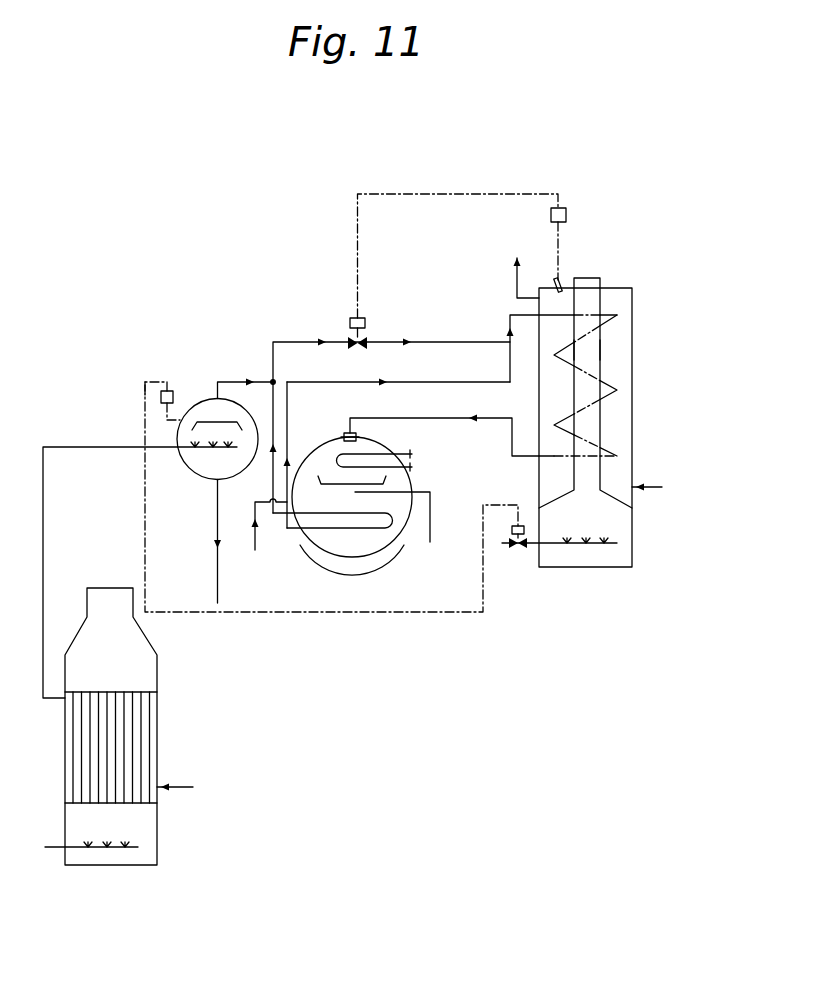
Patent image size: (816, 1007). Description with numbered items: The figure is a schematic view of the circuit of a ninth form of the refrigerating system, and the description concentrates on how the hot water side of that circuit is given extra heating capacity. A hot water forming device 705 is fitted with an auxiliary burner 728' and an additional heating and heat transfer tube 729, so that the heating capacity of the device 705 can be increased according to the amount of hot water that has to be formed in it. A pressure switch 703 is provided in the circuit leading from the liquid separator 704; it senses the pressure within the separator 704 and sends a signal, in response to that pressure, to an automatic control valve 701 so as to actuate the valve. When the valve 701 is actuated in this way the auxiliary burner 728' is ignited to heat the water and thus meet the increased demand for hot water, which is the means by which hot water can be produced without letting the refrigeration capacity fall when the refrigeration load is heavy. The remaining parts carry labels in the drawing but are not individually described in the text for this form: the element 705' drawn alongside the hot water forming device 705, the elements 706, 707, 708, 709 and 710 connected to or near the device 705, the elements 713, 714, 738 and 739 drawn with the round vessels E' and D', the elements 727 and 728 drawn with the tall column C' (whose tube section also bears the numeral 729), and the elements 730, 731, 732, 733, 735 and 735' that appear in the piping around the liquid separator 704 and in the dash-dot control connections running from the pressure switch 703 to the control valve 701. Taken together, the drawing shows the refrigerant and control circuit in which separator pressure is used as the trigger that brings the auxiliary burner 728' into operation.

The automatic control valve 701 is at (512, 530).
The pressure switch 703 is at (145, 396).
The liquid separator 704 is at (366, 322).
The hot water forming device 705 is at (479, 422).
The line 705' is at (535, 337).
The line 706 is at (443, 368).
The line 707 is at (432, 418).
The controller 708 is at (567, 215).
The inlet 709 is at (653, 487).
The outlet 710 is at (516, 284).
The heating coil 713 is at (305, 512).
The outlet line 714 is at (430, 515).
The inlet 727 is at (190, 788).
The spray distributor 728 is at (117, 872).
The auxiliary burner 728' is at (589, 580).
The additional heating and heat transfer tube 729 is at (602, 353).
The line 730 is at (43, 530).
The separator 731 is at (223, 456).
The outlet line 732 is at (220, 603).
The inlet line 733 is at (257, 538).
The line 735 is at (243, 369).
The line 735' is at (315, 441).
The nozzle 738 is at (352, 430).
The cooling coil 739 is at (387, 433).
The absorber column C' is at (134, 726).
The vessel D' is at (352, 573).
The evaporator E' is at (352, 481).